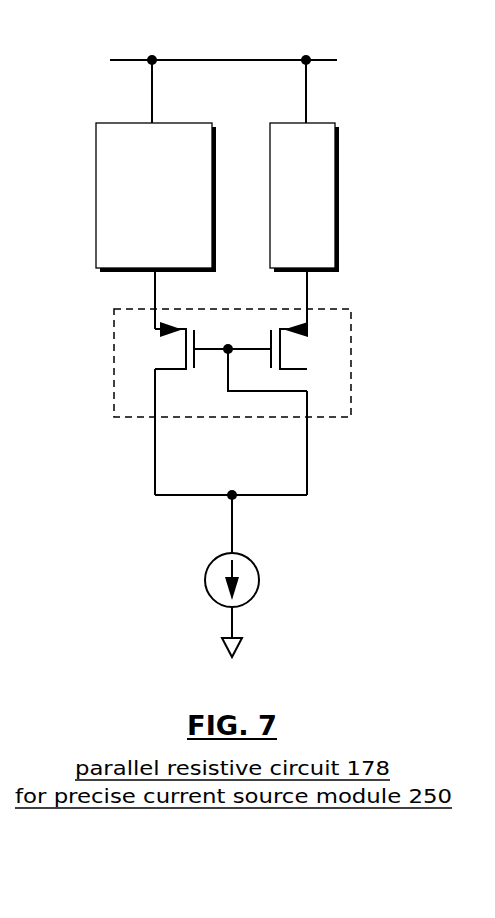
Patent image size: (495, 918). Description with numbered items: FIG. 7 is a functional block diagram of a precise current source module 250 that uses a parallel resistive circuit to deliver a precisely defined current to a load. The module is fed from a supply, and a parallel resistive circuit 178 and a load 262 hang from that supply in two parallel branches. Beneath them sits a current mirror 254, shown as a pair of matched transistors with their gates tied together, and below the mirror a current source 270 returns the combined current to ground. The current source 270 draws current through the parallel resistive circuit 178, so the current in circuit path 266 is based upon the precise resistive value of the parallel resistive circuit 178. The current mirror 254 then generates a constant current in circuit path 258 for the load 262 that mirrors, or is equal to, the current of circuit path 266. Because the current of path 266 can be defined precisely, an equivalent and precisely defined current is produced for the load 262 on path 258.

The parallel resistive circuit 178 is at (96, 150).
The load 262 is at (338, 163).
The circuit path 266 is at (138, 292).
The circuit path 258 is at (326, 292).
The current mirror 254 is at (102, 390).
The current source 270 is at (242, 552).
The precise current source module 250 is at (370, 595).